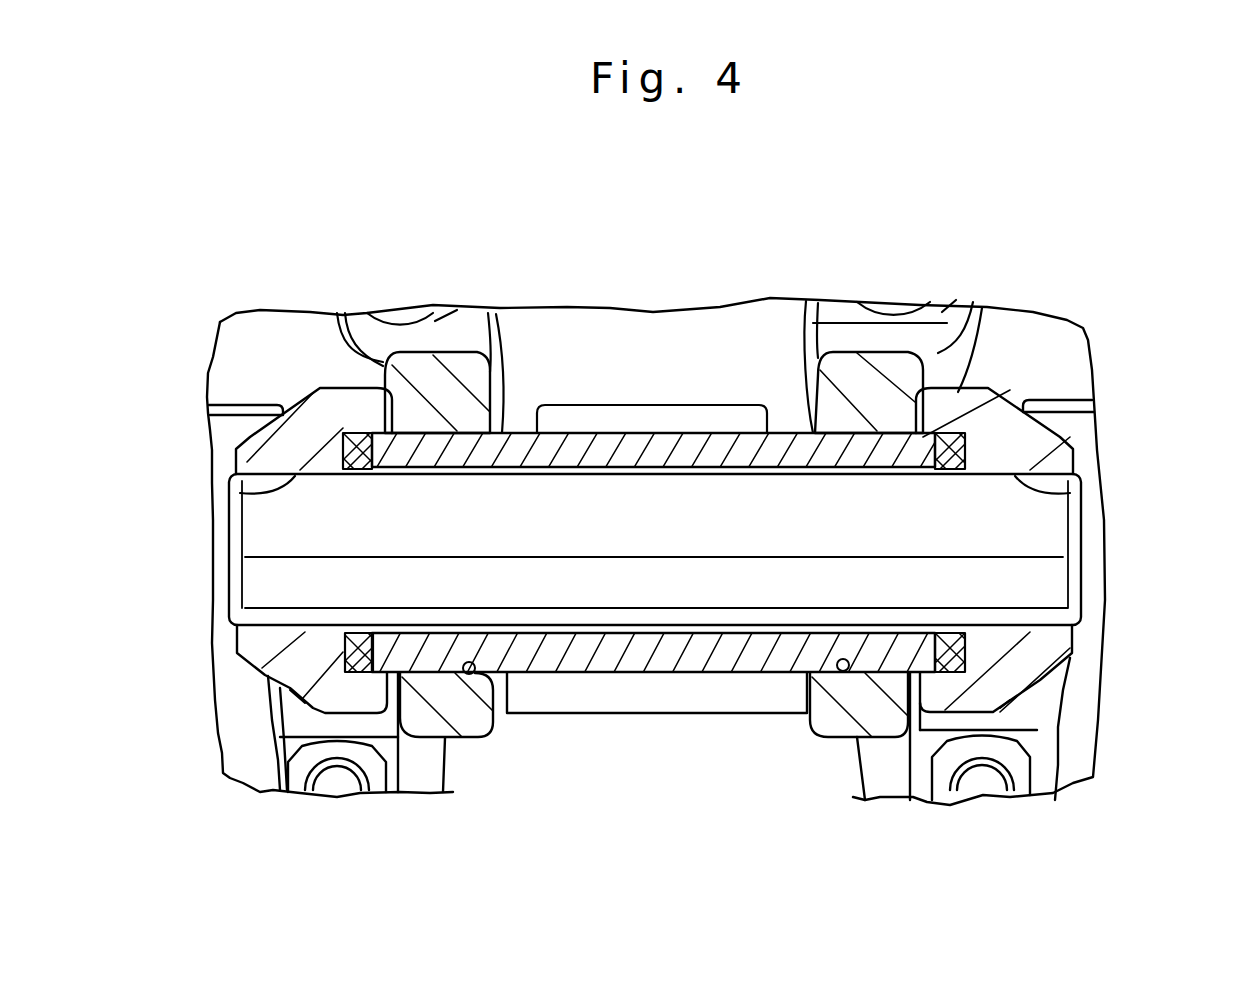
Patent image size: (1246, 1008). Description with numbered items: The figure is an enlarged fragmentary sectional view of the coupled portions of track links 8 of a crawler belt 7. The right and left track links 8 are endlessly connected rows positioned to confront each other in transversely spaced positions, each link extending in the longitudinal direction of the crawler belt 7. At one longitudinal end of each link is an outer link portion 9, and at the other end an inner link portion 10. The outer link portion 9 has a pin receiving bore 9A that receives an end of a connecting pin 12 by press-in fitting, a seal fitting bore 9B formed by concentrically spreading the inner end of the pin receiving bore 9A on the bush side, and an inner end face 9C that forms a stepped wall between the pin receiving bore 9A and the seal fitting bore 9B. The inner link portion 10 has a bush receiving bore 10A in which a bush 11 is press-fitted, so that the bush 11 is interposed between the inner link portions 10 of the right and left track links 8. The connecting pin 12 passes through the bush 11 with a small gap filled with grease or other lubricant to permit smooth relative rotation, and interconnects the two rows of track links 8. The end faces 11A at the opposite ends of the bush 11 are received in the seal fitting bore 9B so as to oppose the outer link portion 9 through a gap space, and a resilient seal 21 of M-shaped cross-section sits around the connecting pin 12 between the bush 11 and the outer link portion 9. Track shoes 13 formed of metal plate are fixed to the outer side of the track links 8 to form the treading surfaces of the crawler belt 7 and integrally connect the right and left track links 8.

The crawler belt 7 is at (1108, 311).
The track links 8 is at (426, 345).
The outer link portion 9 is at (245, 650).
The pin receiving bore 9A is at (247, 493).
The seal fitting bore 9B is at (362, 434).
The inner end face 9C is at (346, 434).
The inner link portion 10 is at (445, 703).
The bush receiving bore 10A is at (469, 674).
The bush 11 is at (727, 655).
The end faces 11A is at (365, 655).
The connecting pin 12 is at (630, 582).
The track shoes 13 is at (657, 328).
The seal 21 is at (317, 707).